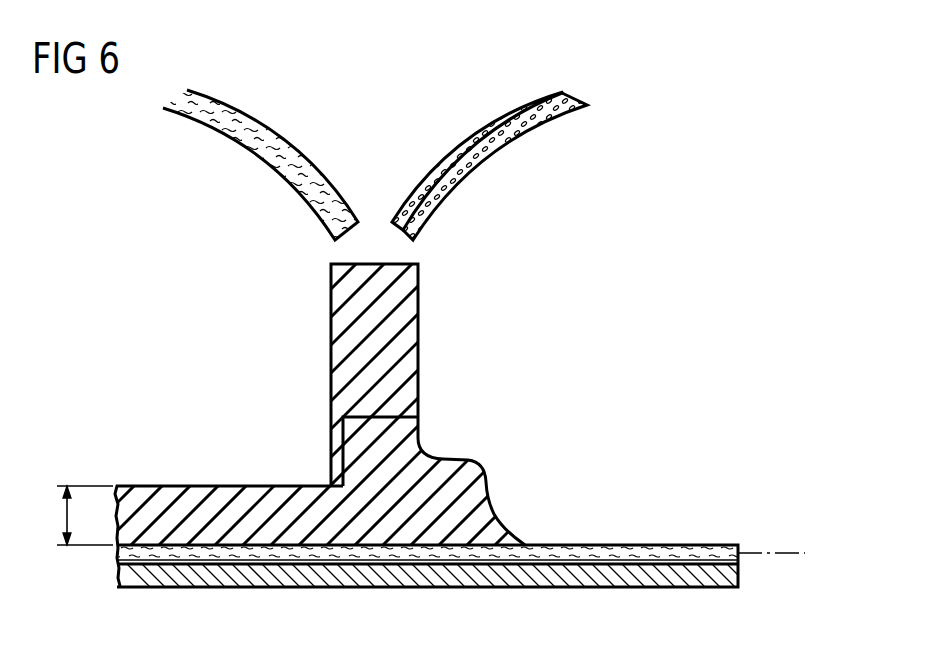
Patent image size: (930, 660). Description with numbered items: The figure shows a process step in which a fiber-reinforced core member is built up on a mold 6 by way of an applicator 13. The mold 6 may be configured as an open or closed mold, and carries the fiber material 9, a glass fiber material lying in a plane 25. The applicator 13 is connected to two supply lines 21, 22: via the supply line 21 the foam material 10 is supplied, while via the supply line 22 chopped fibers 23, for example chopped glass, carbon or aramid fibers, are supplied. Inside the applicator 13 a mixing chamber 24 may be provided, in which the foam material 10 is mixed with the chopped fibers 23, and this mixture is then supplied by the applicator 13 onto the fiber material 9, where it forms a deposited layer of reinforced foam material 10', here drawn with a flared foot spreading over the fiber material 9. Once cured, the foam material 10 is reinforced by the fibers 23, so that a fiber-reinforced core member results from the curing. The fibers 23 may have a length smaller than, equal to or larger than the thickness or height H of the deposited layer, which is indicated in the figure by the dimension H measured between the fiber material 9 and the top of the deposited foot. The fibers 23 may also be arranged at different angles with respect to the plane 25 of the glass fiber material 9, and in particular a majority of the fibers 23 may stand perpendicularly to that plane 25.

The mold 6 is at (733, 578).
The fiber material 9 is at (693, 550).
The foam material 10 is at (391, 365).
The shaped fiber-reinforced matrix material 10' is at (426, 512).
The applicator 13 is at (331, 332).
The supply line 21 is at (482, 128).
The supply line 22 is at (268, 125).
The chopped fibers 23 is at (275, 153).
The mixing chamber 24 is at (418, 332).
The plane 25 is at (787, 548).
The height H is at (75, 515).